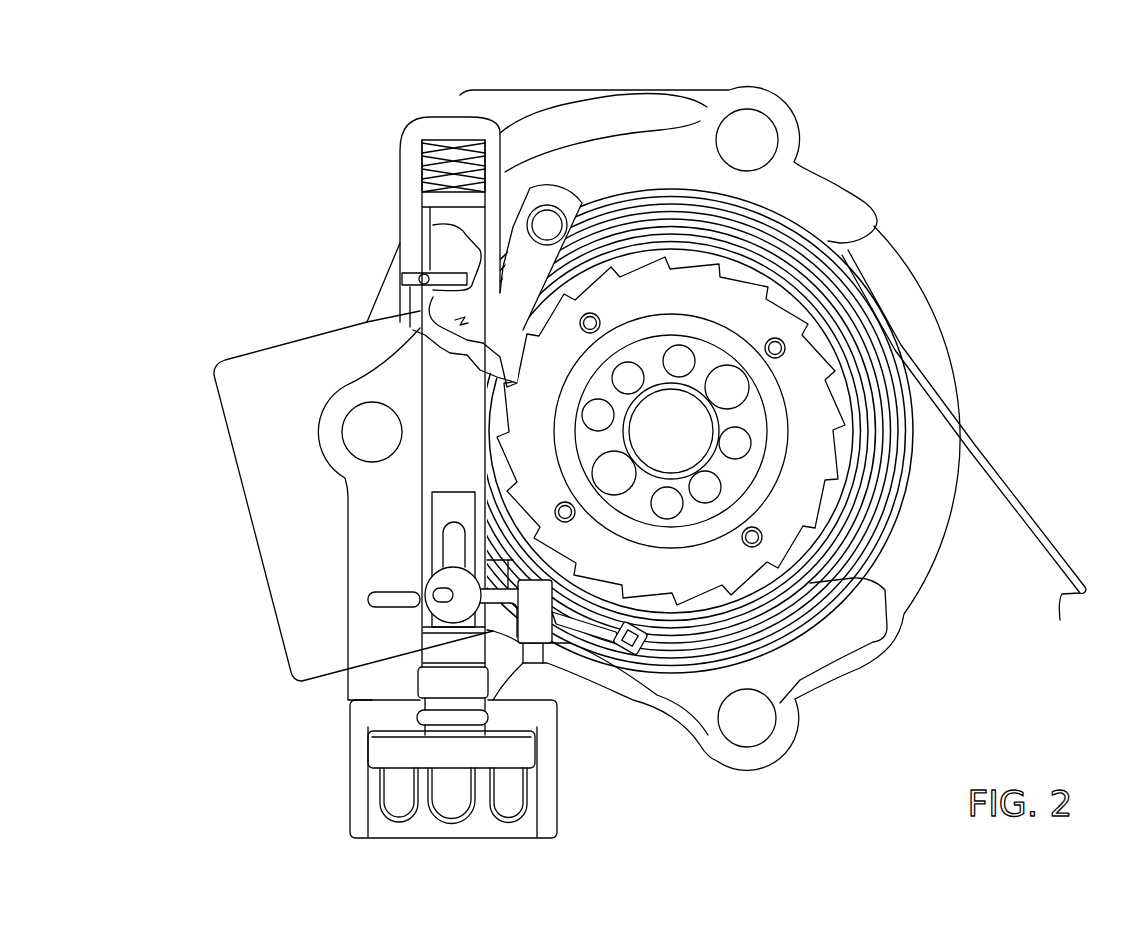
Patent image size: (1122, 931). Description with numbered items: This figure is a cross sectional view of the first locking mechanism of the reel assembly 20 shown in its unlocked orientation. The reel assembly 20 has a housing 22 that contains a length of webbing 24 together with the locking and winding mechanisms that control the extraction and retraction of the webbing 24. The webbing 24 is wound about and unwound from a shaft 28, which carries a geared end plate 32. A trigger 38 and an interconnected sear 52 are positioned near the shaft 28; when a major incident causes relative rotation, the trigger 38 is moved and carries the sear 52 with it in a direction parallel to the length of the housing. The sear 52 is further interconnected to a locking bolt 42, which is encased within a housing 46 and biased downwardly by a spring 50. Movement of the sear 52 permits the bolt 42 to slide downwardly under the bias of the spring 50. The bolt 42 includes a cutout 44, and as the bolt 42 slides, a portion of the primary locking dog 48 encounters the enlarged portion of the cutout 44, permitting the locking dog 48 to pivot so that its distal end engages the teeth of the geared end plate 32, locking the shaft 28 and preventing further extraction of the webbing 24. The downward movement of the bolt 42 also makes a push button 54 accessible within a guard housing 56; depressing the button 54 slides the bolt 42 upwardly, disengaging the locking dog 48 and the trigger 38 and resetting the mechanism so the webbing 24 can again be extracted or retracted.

The reel assembly 20 is at (657, 453).
The housing 22 is at (387, 297).
The webbing 24 is at (1087, 592).
The shaft 28 is at (765, 385).
The geared end plate 32 is at (753, 315).
The trigger 38 is at (367, 600).
The locking bolt 42 is at (433, 473).
The cutout 44 is at (443, 235).
The housing 46 is at (437, 684).
The primary locking dog 48 is at (456, 321).
The spring 50 is at (458, 137).
The sear 52 is at (448, 612).
The push button 54 is at (490, 750).
The guard housing 56 is at (549, 830).